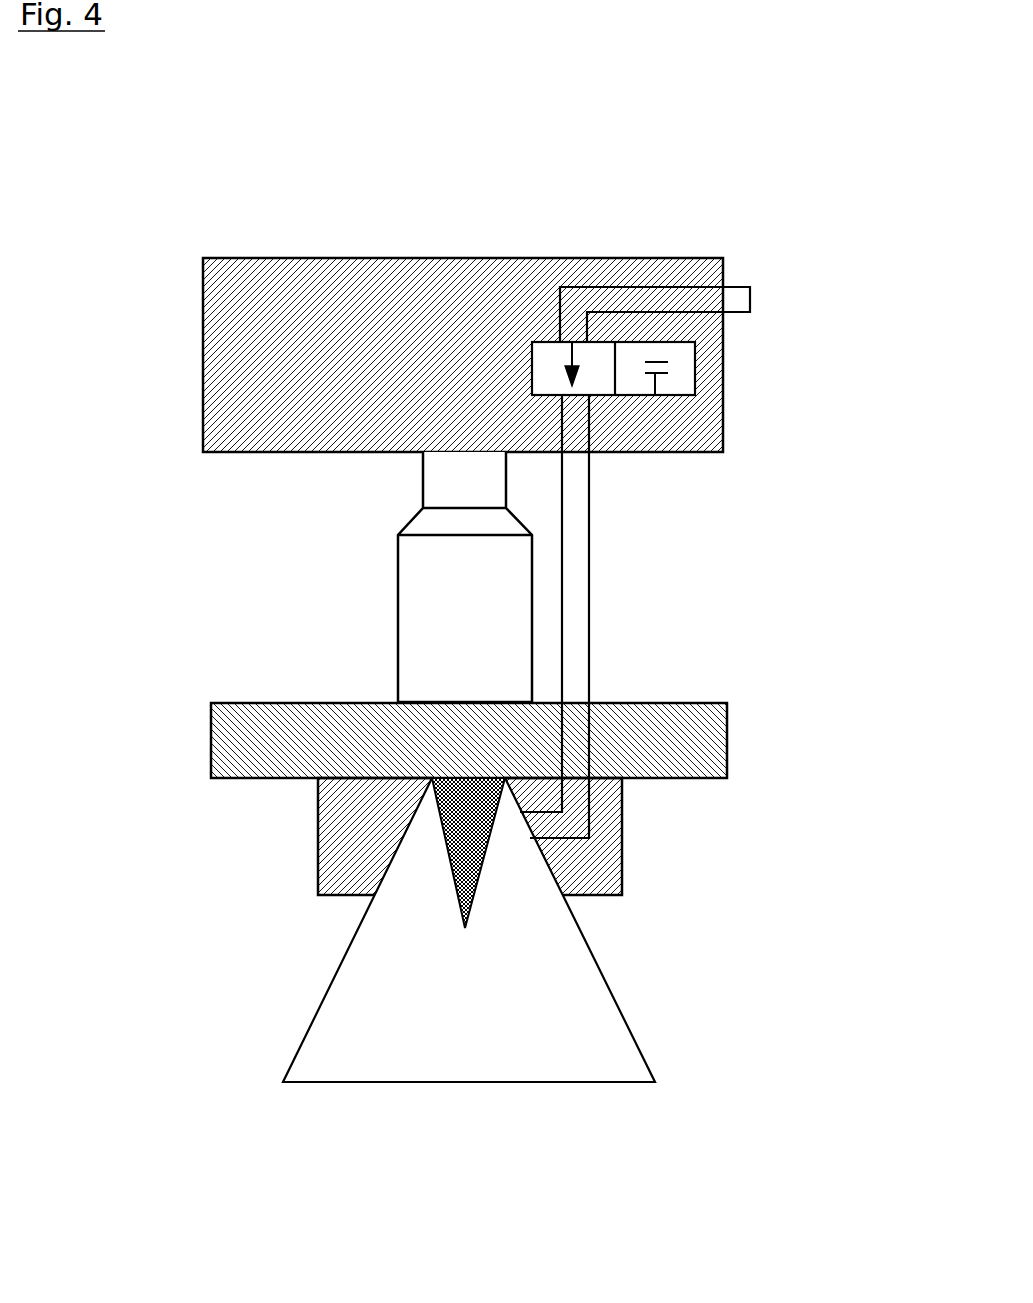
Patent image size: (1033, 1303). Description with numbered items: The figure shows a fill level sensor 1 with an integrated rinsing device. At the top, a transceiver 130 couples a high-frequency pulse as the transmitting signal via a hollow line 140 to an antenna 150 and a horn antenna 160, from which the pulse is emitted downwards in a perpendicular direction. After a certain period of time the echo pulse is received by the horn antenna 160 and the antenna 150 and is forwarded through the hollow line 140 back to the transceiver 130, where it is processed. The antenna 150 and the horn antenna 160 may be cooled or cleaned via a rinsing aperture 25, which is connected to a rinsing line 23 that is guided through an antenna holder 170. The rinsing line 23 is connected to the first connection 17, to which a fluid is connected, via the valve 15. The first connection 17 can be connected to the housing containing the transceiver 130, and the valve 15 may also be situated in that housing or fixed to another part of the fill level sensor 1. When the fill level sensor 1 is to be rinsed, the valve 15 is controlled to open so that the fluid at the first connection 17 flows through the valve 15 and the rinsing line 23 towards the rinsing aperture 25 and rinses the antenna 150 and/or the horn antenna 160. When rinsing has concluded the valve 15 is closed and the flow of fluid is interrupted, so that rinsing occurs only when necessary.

The fill level sensor 1 is at (528, 188).
The valve 15 is at (685, 362).
The first connection 17 is at (738, 305).
The rinsing line 23 is at (580, 587).
The rinsing aperture 25 is at (527, 827).
The transceiver 130 is at (262, 355).
The hollow line 140 is at (422, 607).
The antenna 150 is at (470, 882).
The horn antenna 160 is at (613, 1082).
The antenna holder 170 is at (345, 845).